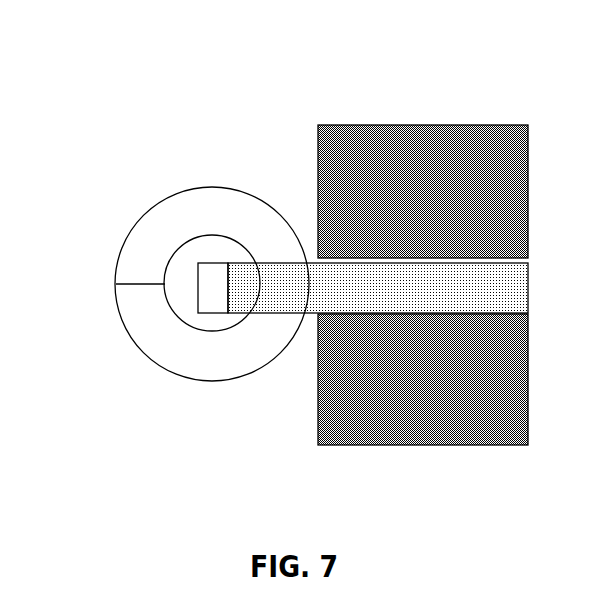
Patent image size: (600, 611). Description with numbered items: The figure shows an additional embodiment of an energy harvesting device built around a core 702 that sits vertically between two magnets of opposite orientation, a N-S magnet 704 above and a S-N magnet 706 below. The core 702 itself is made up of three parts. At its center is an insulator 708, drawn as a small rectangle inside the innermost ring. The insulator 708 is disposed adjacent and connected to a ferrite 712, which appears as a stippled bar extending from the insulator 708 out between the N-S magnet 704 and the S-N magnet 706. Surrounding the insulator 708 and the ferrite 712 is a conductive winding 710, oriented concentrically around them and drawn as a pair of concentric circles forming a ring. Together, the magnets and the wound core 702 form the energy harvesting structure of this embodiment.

The core 702 is at (275, 82).
The N-S magnet 704 is at (485, 178).
The S-N magnet 706 is at (492, 422).
The insulator 708 is at (208, 275).
The conductive winding 710 is at (229, 207).
The ferrite 712 is at (452, 298).